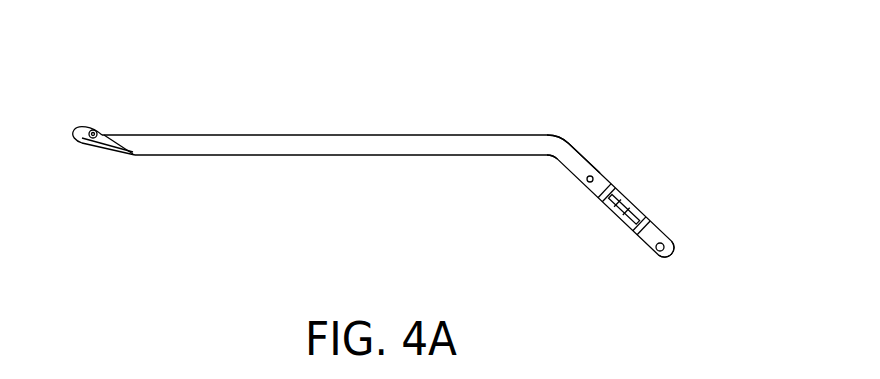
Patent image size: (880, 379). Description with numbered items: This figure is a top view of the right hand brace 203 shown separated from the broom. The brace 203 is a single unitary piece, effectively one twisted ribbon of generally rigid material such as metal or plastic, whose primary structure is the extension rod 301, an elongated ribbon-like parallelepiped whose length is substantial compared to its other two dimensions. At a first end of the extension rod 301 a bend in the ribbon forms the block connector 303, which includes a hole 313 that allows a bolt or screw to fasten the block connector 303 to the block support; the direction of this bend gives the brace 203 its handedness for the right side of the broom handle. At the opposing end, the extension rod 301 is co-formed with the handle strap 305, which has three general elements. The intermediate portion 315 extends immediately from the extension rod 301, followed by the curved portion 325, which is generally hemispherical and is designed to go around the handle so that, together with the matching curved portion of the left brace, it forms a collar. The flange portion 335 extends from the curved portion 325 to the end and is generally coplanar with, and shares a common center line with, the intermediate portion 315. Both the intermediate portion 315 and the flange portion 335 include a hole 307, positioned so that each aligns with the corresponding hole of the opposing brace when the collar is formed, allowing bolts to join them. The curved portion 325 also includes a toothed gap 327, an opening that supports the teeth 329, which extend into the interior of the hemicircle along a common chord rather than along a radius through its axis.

The brace 203 is at (518, 52).
The extension rod 301 is at (283, 135).
The block connector 303 is at (138, 109).
The hole 313 is at (90, 131).
The handle strap 305 is at (578, 144).
The intermediate portion 315 is at (562, 172).
The hole 307 is at (631, 159).
The curved portion 325 is at (638, 213).
The toothed gap 327 is at (607, 222).
The teeth 329 is at (614, 206).
The flange portion 335 is at (655, 262).